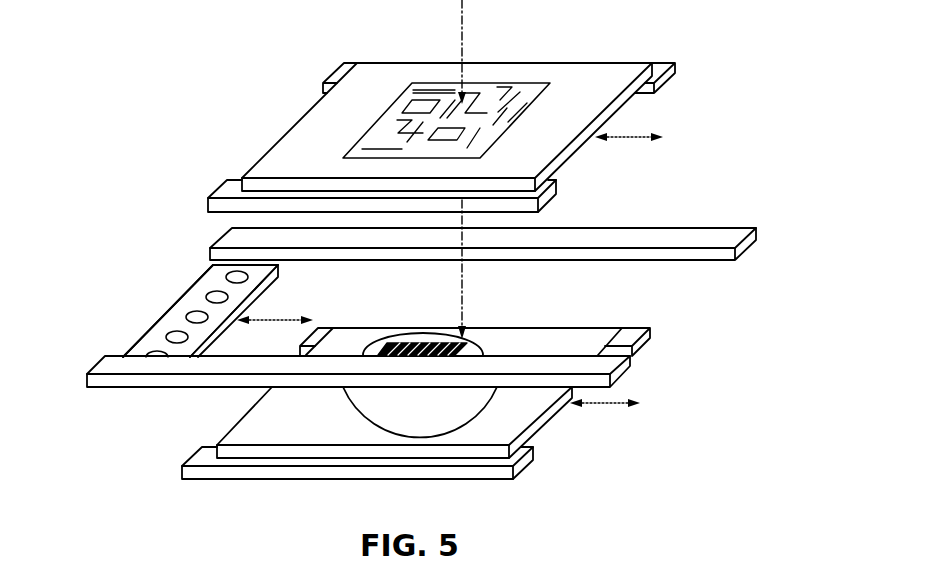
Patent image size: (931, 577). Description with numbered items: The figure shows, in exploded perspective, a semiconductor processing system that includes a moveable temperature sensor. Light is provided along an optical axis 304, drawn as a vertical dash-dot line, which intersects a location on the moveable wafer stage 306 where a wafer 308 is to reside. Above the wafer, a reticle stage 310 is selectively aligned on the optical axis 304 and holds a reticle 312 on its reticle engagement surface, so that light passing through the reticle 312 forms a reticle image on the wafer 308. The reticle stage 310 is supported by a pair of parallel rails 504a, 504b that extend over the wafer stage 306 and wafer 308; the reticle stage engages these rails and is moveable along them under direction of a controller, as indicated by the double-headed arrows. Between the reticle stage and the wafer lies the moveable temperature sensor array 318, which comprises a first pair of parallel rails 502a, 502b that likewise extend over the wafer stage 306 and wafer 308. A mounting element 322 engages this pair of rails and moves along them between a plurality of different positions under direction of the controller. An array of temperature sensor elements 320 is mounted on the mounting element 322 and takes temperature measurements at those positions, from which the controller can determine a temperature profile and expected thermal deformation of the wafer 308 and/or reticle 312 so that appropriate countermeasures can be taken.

The optical axis 304 is at (465, 32).
The moveable wafer stage 306 is at (500, 435).
The wafer 308 is at (473, 352).
The reticle stage 310 is at (560, 66).
The reticle 312 is at (425, 90).
The moveable temperature sensor array 318 is at (99, 304).
The temperature sensor elements 320 is at (237, 277).
The mounting element 322 is at (190, 302).
The first parallel rail 502a is at (302, 256).
The first parallel rail 502b is at (217, 362).
The parallel rail 504a is at (660, 85).
The parallel rail 504b is at (557, 186).